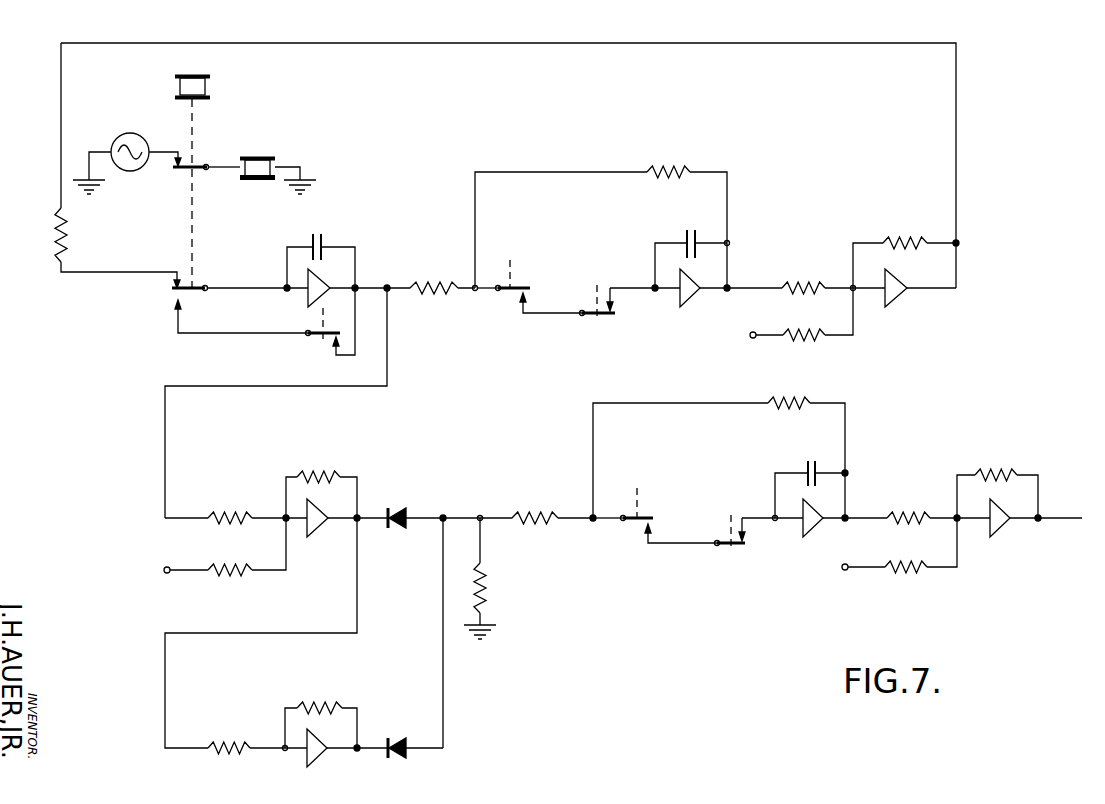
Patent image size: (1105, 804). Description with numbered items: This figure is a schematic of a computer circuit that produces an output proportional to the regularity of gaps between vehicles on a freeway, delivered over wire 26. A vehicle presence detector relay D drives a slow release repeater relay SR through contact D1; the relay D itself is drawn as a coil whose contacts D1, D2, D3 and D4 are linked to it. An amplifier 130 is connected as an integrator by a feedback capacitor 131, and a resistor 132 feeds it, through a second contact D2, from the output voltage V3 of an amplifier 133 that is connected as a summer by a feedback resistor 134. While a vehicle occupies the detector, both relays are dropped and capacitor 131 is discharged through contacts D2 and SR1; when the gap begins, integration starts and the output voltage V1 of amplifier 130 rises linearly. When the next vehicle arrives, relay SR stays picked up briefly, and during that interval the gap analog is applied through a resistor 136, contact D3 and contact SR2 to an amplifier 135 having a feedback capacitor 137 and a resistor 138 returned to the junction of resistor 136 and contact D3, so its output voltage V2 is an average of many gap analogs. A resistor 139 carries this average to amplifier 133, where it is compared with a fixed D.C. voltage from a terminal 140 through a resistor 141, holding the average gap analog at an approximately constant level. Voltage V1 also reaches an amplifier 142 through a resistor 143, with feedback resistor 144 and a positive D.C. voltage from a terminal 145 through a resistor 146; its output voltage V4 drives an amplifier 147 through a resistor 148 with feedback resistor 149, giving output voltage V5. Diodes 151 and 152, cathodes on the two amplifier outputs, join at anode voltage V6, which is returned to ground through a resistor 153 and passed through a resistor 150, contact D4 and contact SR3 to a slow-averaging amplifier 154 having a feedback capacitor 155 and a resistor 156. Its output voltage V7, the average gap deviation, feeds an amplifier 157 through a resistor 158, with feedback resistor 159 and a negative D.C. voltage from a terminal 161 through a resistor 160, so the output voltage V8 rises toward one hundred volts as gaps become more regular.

The wire 26 is at (1071, 519).
The amplifier 130 is at (310, 297).
The feedback capacitor 131 is at (324, 242).
The resistor 132 is at (60, 236).
The amplifier 133 is at (907, 293).
The feedback resistor 134 is at (903, 229).
The amplifier 135 is at (690, 297).
The resistor 136 is at (431, 275).
The feedback capacitor 137 is at (683, 233).
The resistor 138 is at (667, 161).
The resistor 139 is at (805, 266).
The terminal 140 is at (756, 339).
The resistor 141 is at (793, 330).
The amplifier 142 is at (321, 531).
The resistor 143 is at (218, 513).
The feedback resistor 144 is at (320, 468).
The terminal 145 is at (170, 573).
The resistor 146 is at (232, 557).
The amplifier 147 is at (320, 758).
The resistor 148 is at (217, 746).
The resistor 149 is at (338, 694).
The resistor 150 is at (522, 515).
The diode 151 is at (402, 513).
The diode 152 is at (403, 757).
The resistor 153 is at (488, 594).
The slow-averaging amplifier 154 is at (813, 528).
The feedback capacitor 155 is at (807, 468).
The resistor 156 is at (796, 402).
The amplifier 157 is at (1001, 523).
The resistor 158 is at (906, 504).
The feedback resistor 159 is at (997, 463).
The resistor 160 is at (908, 553).
The terminal 161 is at (845, 571).
The detector relay D is at (208, 88).
The contact D1 is at (193, 165).
The contact D2 is at (193, 287).
The contact D3 is at (513, 285).
The contact D4 is at (640, 515).
The slow release repeater relay SR is at (255, 160).
The contact SR1 is at (327, 338).
The contact SR2 is at (603, 317).
The contact SR3 is at (722, 548).
The output voltage of amplifier 130 V1 is at (358, 287).
The output voltage of amplifier 135 V2 is at (729, 286).
The output voltage of amplifier 133 V3 is at (958, 243).
The output voltage of amplifier 142 V4 is at (358, 513).
The output voltage of amplifier 147 V5 is at (359, 745).
The anode voltage of diodes 151 and 152 V6 is at (444, 517).
The output voltage of amplifier 154 V7 is at (847, 515).
The output voltage of amplifier 157 V8 is at (1039, 516).